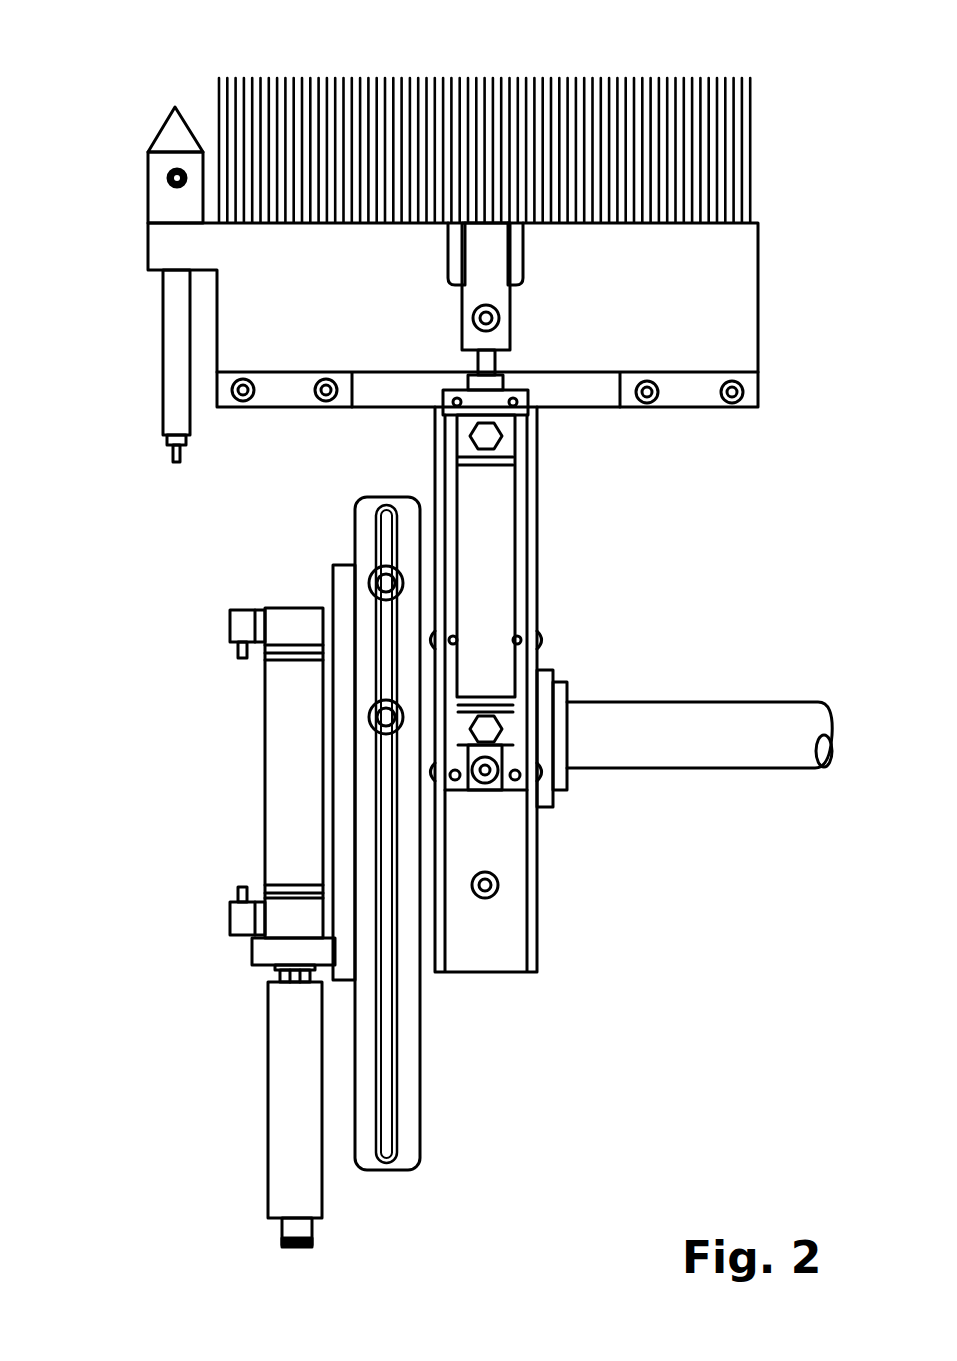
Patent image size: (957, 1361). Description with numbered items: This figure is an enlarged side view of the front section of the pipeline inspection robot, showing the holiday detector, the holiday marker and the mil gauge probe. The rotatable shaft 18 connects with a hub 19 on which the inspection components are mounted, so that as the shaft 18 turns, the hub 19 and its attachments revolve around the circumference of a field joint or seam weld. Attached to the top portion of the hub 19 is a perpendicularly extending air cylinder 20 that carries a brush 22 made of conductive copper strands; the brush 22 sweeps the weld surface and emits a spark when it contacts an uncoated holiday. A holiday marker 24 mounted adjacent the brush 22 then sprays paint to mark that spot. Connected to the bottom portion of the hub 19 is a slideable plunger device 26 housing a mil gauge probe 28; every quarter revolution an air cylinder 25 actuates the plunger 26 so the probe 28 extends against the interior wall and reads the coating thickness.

The rotatable shaft 18 is at (767, 702).
The hub 19 is at (543, 668).
The air cylinder 20 is at (487, 530).
The brush 22 is at (428, 78).
The holiday marker 24 is at (163, 375).
The air cylinder 25 is at (293, 722).
The slideable plunger device 26 is at (270, 1092).
The mil gauge probe 28 is at (282, 1230).